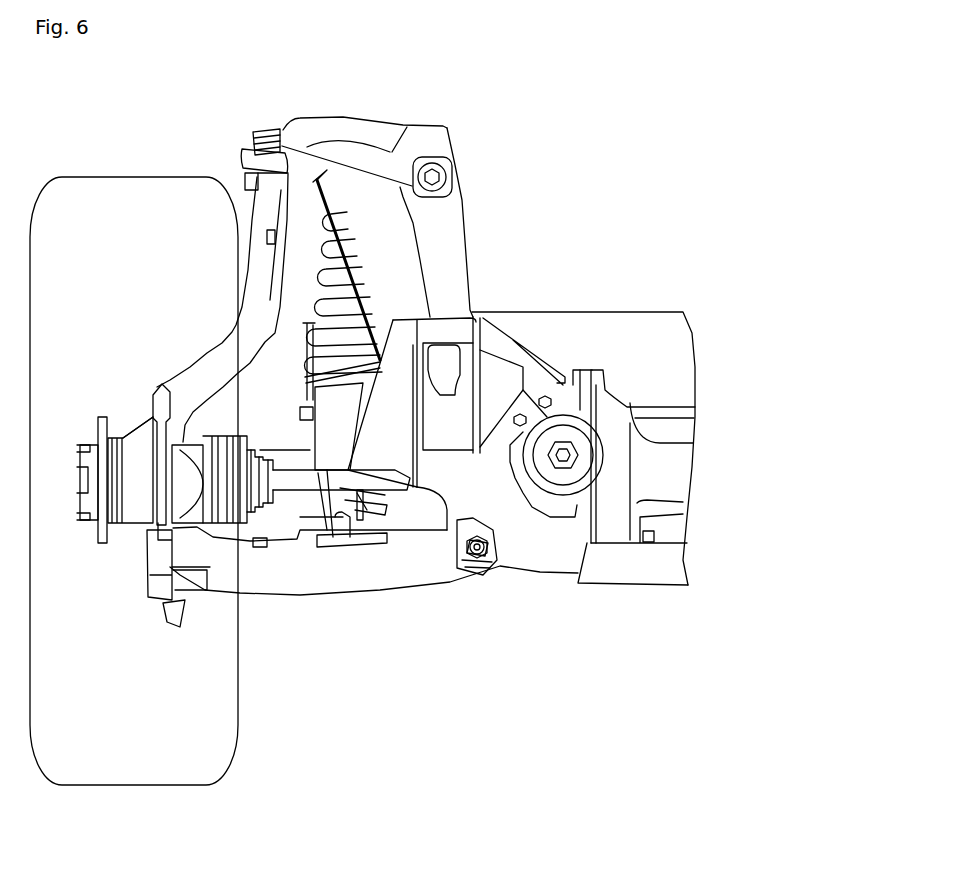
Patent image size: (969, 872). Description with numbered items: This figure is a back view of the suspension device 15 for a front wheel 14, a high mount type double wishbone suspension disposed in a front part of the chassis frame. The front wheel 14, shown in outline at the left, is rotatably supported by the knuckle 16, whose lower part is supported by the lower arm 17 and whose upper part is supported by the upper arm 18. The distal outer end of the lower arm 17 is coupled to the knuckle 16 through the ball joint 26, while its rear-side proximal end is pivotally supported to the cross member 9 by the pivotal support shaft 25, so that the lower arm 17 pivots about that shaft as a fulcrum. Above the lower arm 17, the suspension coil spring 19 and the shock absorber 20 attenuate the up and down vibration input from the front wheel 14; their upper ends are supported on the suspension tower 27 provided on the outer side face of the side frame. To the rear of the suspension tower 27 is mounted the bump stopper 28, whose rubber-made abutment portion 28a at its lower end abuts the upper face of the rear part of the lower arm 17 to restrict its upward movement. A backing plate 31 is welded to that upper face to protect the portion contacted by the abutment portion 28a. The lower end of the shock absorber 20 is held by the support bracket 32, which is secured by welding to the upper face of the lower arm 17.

The cross member 9 is at (627, 568).
The front wheel 14 is at (125, 177).
The suspension device 15 is at (427, 113).
The knuckle 16 is at (150, 577).
The lower arm 17 is at (223, 598).
The upper arm 18 is at (316, 123).
The suspension coil spring 19 is at (325, 275).
The shock absorber 20 is at (323, 440).
The pivotal support shaft 25 is at (473, 577).
The ball joint 26 is at (168, 505).
The suspension tower 27 is at (465, 222).
The bump stopper 28 is at (400, 320).
The abutment portion 28a is at (362, 520).
The backing plate 31 is at (350, 548).
The support bracket 32 is at (260, 547).